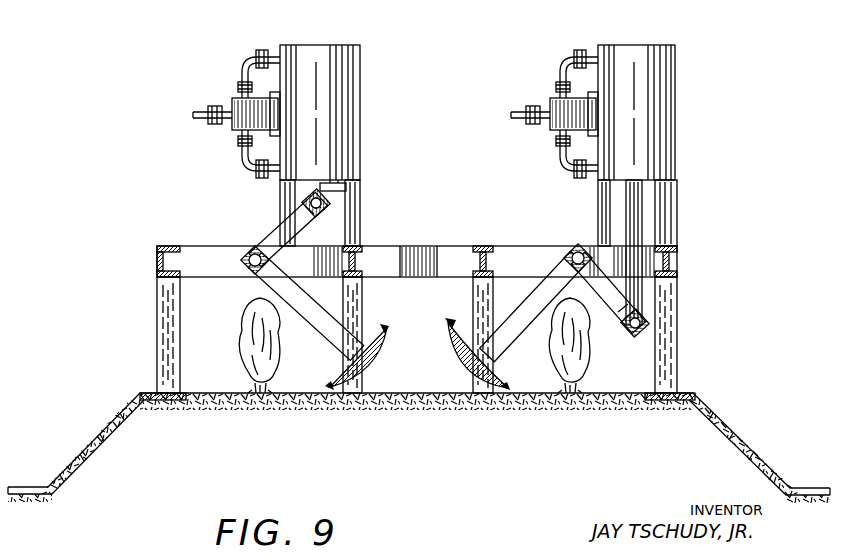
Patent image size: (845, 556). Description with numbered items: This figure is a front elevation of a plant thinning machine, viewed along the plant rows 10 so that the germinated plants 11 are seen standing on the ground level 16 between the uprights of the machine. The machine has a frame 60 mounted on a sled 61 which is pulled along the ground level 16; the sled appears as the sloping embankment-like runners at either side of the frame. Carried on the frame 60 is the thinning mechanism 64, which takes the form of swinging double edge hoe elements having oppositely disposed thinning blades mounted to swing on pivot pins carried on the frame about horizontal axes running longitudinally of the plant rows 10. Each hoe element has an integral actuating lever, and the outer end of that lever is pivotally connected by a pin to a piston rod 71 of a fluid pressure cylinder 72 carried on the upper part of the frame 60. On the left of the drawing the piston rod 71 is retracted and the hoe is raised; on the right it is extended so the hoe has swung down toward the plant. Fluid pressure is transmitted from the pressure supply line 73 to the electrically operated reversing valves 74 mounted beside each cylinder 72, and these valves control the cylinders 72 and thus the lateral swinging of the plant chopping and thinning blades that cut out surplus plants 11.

The plant row 10 is at (248, 393).
The plants 11 is at (241, 332).
The ground level 16 is at (209, 393).
The frame 60 is at (678, 304).
The sled 61 is at (126, 404).
The thinning mechanism 64 is at (543, 302).
The piston rods 71 is at (346, 187).
The fluid pressure cylinders 72 is at (360, 143).
The pressure supply line 73 is at (206, 112).
The electrically operated reversing valves 74 is at (235, 98).